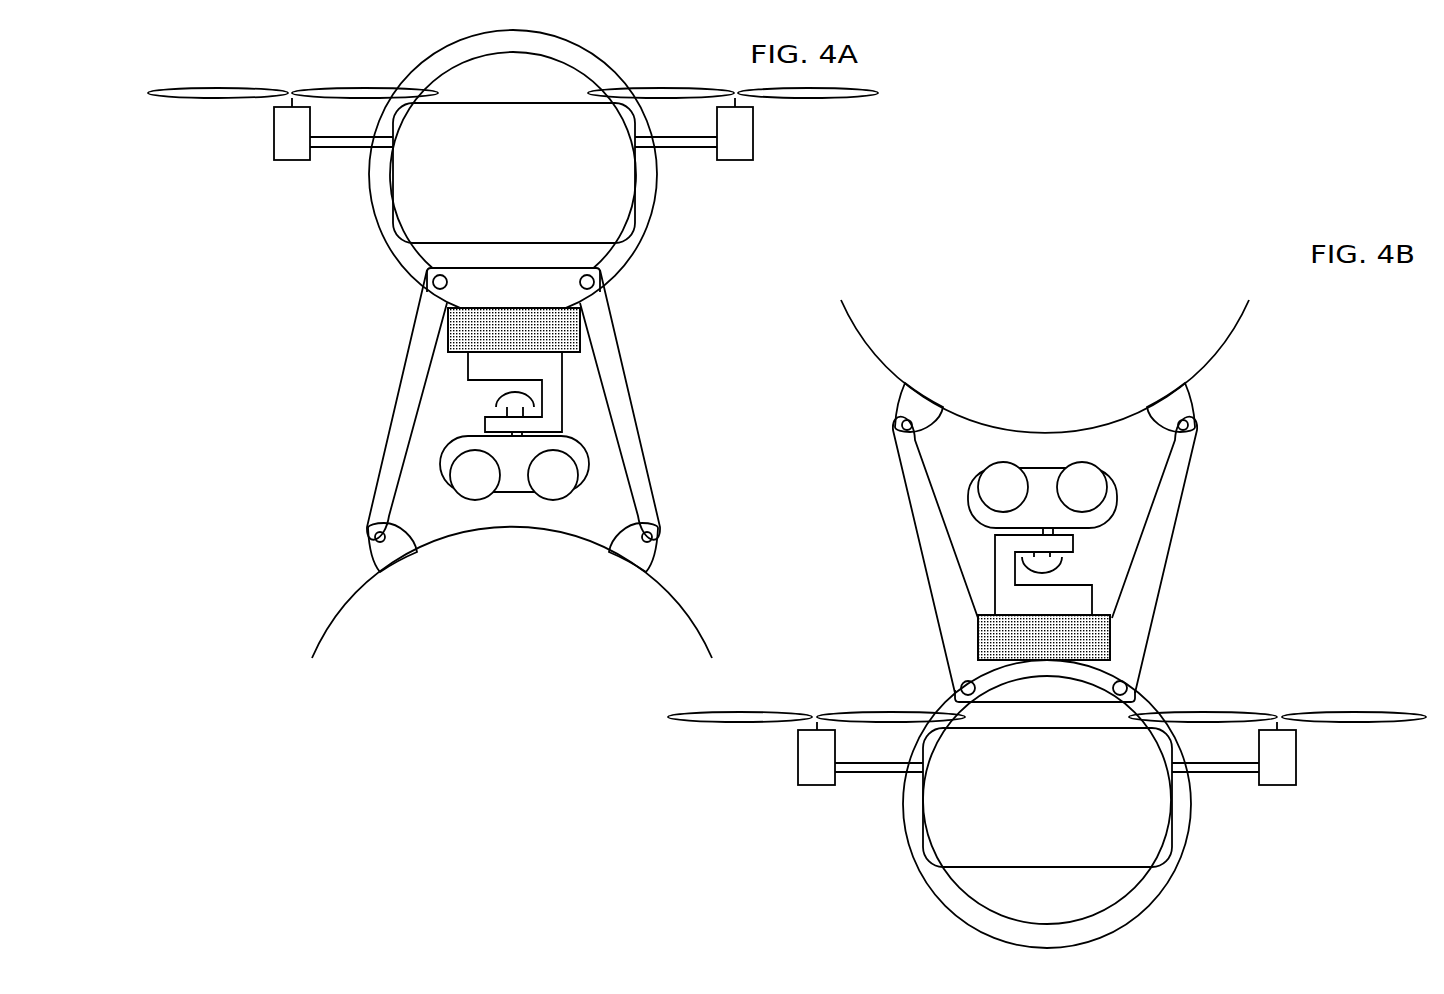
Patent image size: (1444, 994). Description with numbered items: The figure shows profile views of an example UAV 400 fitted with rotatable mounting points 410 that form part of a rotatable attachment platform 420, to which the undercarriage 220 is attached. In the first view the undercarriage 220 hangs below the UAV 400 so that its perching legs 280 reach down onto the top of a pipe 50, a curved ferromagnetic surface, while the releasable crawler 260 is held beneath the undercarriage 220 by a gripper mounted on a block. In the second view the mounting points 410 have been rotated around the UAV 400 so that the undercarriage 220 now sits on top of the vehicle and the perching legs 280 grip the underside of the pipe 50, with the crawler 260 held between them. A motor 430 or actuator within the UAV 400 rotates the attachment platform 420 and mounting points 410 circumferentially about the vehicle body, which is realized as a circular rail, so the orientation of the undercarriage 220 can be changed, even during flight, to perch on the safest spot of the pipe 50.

In FIG. 4A, the UAV 400 is at (357, 243).
In FIG. 4A, the undercarriage 220 is at (495, 421).
In FIG. 4A, the rotatable mounting points 410 is at (589, 280).
In FIG. 4A, the perching legs 280 is at (601, 421).
In FIG. 4A, the releasable crawler 260 is at (598, 482).
In FIG. 4B, the pipe 50 is at (1220, 365).
In FIG. 4B, the rotatable attachment platform 420 is at (897, 798).
In FIG. 4B, the motor 430 is at (1047, 802).